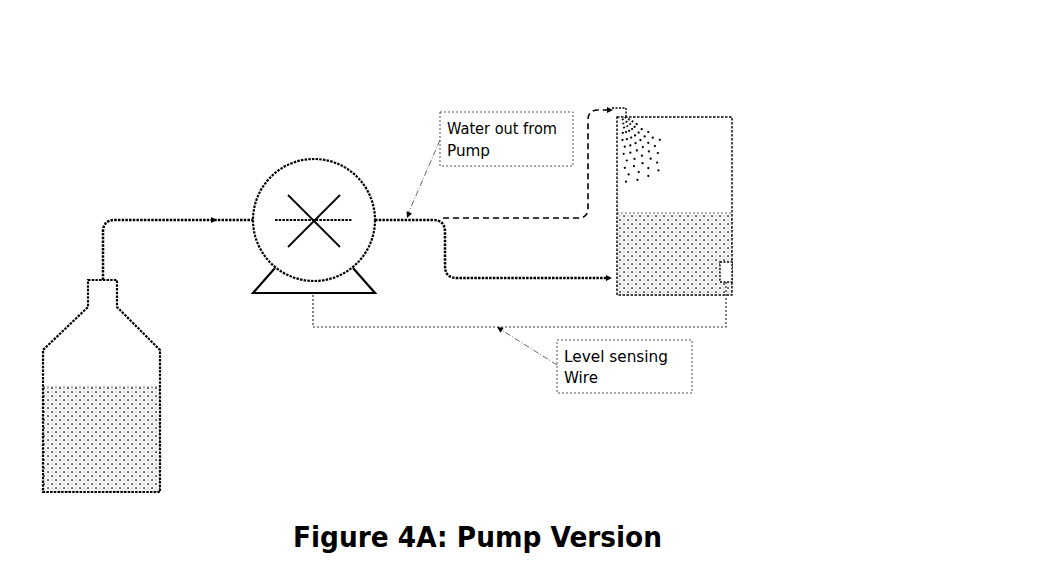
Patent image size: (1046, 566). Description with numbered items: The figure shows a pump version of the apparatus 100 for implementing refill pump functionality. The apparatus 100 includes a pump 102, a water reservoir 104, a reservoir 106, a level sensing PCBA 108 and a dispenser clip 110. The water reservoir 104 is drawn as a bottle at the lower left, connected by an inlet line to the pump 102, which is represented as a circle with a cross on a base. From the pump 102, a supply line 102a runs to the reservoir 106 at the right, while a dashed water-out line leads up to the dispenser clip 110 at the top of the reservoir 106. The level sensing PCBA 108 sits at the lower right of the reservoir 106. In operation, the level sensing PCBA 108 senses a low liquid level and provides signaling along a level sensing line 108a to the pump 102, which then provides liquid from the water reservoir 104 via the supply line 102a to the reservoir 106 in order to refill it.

The apparatus 100 is at (99, 47).
The pump 102 is at (282, 157).
The supply line 102a is at (516, 275).
The water reservoir 104 is at (166, 405).
The reservoir 106 is at (740, 186).
The level sensing PCBA 108 is at (734, 266).
The level sensing line 108a is at (736, 309).
The dispenser clip 110 is at (637, 105).